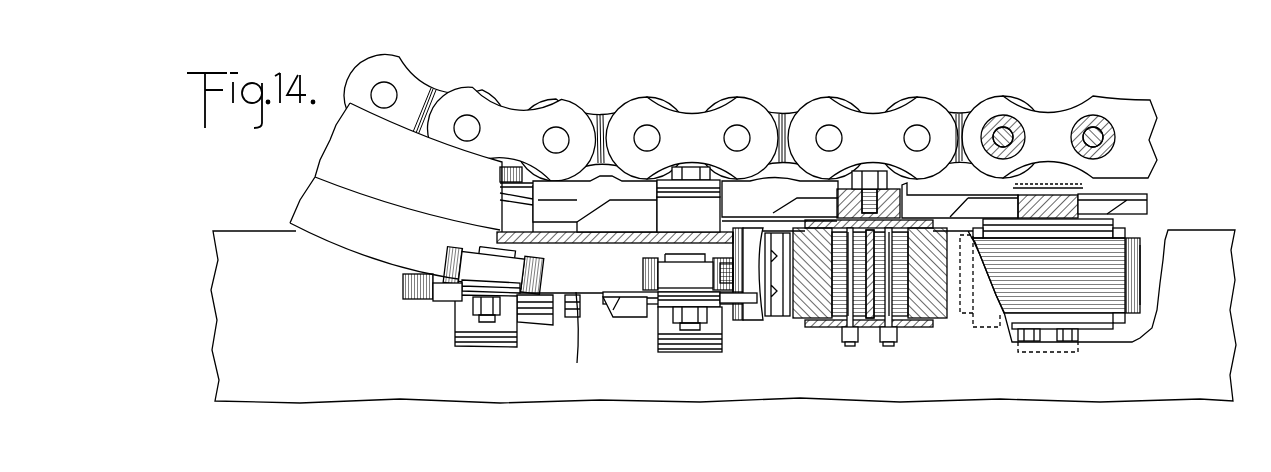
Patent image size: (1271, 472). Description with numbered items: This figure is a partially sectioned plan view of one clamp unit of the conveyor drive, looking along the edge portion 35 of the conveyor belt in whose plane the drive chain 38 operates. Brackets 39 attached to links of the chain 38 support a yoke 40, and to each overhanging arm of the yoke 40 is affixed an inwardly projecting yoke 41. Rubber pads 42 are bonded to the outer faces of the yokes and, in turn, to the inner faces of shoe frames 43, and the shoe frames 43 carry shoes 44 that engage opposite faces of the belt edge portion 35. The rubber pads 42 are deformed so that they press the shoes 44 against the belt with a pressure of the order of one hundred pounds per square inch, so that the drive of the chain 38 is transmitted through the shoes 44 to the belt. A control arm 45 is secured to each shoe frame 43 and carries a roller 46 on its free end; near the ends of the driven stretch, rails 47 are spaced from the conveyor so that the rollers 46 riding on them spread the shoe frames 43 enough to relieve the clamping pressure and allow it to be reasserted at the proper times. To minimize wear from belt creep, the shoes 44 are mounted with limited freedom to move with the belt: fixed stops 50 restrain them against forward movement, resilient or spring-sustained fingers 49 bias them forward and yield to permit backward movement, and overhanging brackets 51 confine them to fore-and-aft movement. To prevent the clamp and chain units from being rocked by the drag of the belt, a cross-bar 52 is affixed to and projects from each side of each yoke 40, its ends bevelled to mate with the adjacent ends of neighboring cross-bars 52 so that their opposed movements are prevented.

The edge portion 35 is at (1197, 242).
The chain 38 is at (688, 127).
The brackets 39 is at (710, 187).
The yoke 40 is at (670, 210).
The inwardly projecting yoke 41 is at (900, 318).
The rubber pads 42 is at (926, 227).
The shoe frames 43 is at (937, 318).
The shoes 44 is at (1103, 258).
The control arm 45 is at (484, 337).
The roller 46 is at (447, 260).
The rails 47 is at (580, 282).
The fingers 49 is at (403, 288).
The fixed stops 50 is at (1142, 280).
The overhanging brackets 51 is at (1098, 229).
The cross-bar 52 is at (624, 207).